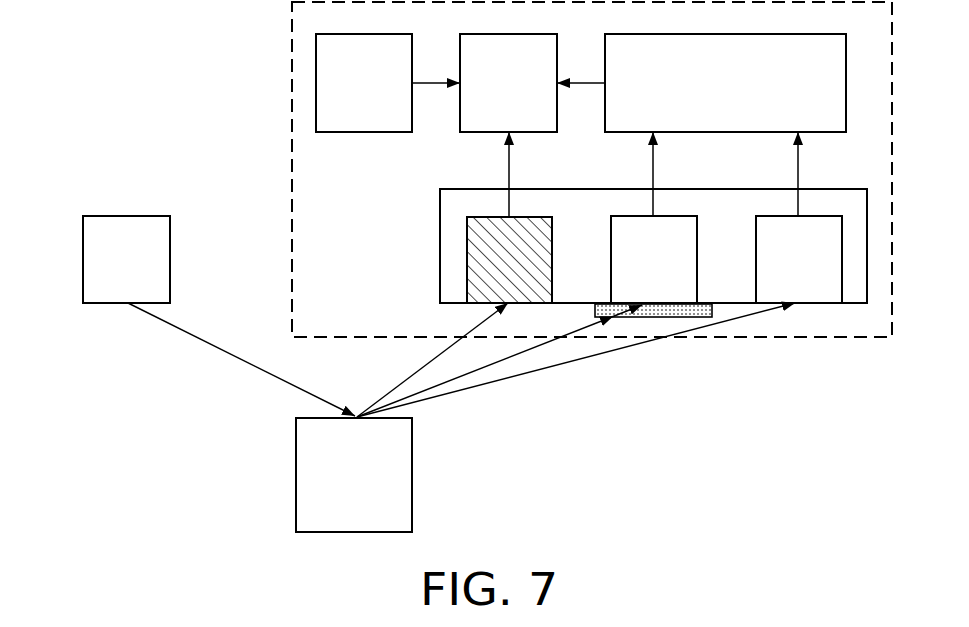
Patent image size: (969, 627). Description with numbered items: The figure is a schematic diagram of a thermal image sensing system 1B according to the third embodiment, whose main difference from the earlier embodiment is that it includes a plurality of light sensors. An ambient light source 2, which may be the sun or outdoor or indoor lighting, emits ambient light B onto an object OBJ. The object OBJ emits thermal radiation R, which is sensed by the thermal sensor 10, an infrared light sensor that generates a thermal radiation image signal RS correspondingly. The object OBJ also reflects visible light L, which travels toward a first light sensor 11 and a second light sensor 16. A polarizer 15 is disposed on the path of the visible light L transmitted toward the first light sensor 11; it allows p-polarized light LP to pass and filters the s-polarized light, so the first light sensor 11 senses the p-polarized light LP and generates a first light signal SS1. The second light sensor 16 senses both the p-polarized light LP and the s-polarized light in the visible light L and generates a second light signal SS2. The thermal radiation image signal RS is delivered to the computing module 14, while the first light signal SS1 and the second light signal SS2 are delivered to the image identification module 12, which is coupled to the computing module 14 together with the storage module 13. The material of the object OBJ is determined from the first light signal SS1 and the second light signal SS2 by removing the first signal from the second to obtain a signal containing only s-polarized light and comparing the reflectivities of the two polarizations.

The thermal image sensing system 1B is at (292, 50).
The storage module 13 is at (377, 98).
The computing module 14 is at (521, 98).
The image identification module 12 is at (738, 98).
The thermal sensor 10 is at (490, 268).
The light sensor 11 is at (690, 265).
The second light sensor 16 is at (833, 278).
The polarizer 15 is at (693, 310).
The thermal radiation image signal RS is at (509, 165).
The first light signal SS1 is at (653, 165).
The second light signal SS2 is at (798, 165).
The p-polarized light LP is at (635, 317).
The visible light L is at (472, 374).
The thermal radiation R is at (405, 381).
The ambient light B is at (237, 360).
The ambient light source 2 is at (95, 260).
The object OBJ is at (296, 476).